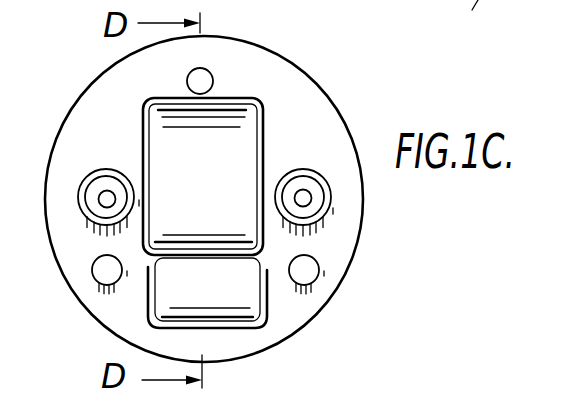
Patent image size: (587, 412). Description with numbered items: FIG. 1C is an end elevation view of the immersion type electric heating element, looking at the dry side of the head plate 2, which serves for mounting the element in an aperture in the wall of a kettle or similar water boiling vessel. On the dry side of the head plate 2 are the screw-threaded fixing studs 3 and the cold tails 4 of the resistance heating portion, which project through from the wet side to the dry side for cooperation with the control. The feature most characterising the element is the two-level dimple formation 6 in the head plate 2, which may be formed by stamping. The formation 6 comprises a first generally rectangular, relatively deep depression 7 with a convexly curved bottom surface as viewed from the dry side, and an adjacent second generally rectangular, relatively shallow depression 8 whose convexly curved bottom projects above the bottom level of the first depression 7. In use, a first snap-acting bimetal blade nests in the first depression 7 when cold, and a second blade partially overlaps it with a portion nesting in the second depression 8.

The head plate 2 is at (311, 78).
The screw-threaded fixing studs 3 is at (212, 74).
The cold tails 4 is at (104, 201).
The two-level dimple formation 6 is at (130, 131).
The first depression 7 is at (230, 152).
The second depression 8 is at (222, 293).